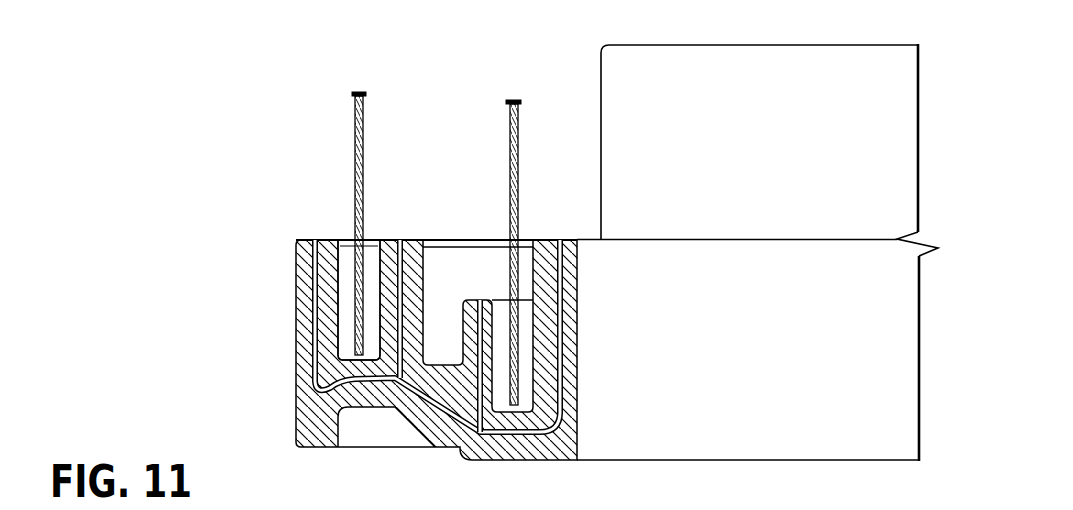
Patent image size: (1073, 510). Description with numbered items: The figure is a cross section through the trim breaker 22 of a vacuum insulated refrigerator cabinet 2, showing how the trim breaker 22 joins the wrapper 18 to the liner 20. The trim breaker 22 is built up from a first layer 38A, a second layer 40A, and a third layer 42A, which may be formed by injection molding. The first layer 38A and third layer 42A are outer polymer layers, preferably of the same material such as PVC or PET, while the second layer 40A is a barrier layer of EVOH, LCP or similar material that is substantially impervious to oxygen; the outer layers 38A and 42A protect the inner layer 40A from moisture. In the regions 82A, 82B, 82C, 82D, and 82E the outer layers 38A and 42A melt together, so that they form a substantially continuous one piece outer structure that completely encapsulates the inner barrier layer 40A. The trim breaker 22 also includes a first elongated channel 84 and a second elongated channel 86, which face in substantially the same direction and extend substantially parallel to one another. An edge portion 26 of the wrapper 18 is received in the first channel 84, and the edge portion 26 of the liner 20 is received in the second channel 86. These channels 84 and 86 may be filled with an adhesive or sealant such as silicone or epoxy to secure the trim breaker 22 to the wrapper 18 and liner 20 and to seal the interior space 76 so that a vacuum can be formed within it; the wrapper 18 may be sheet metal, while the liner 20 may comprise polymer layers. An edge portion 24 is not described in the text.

The mounting structure 2 is at (922, 79).
The wrapper 18 is at (354, 139).
The liner 20 is at (506, 128).
The trim breaker 22 is at (290, 262).
The first terminal 24 is at (352, 312).
The edge portion 26 is at (520, 356).
The first layer 38A is at (568, 290).
The second layer 40A is at (556, 318).
The third layer 42A is at (541, 240).
The interior space 76 is at (453, 148).
The region 82A is at (313, 243).
The region 82B is at (400, 245).
The region 82C is at (480, 300).
The region 82D is at (558, 240).
The region 82E is at (316, 405).
The first elongated channel 84 is at (373, 247).
The second elongated channel 86 is at (522, 242).